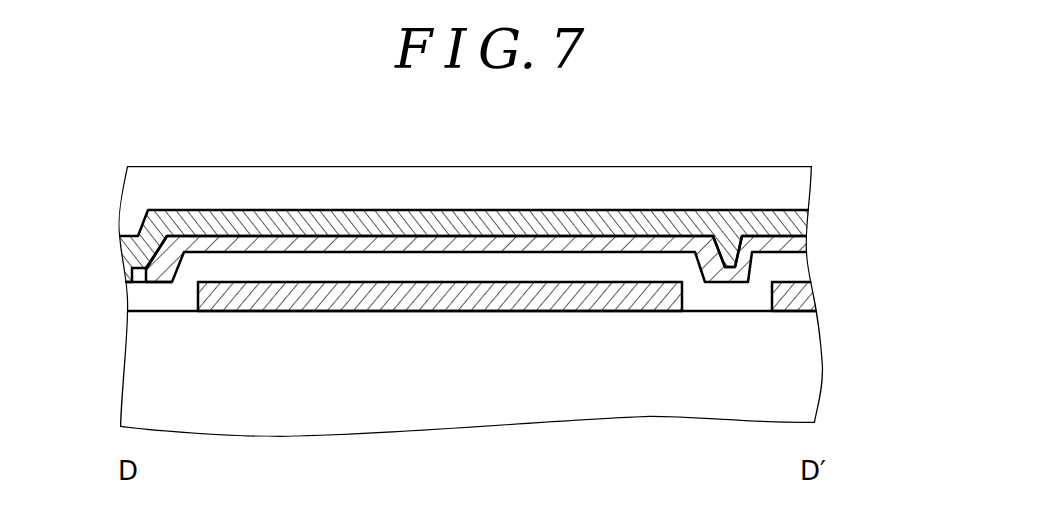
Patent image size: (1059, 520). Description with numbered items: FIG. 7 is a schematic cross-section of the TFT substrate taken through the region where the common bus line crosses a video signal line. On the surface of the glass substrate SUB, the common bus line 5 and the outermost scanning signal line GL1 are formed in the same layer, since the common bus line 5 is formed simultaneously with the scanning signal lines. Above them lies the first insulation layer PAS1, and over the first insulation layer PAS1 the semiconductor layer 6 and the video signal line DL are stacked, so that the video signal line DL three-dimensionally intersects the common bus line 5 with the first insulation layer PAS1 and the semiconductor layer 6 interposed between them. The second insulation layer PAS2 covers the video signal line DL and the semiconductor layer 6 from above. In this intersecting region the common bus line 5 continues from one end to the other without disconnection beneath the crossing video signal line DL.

The video signal line DL is at (357, 210).
The semiconductor layer 6 is at (520, 245).
The second insulation layer PAS2 is at (660, 183).
The scanning signal line GL1 is at (798, 297).
The first insulation layer PAS1 is at (157, 303).
The common bus line 5 is at (429, 300).
The glass substrate SUB is at (627, 398).